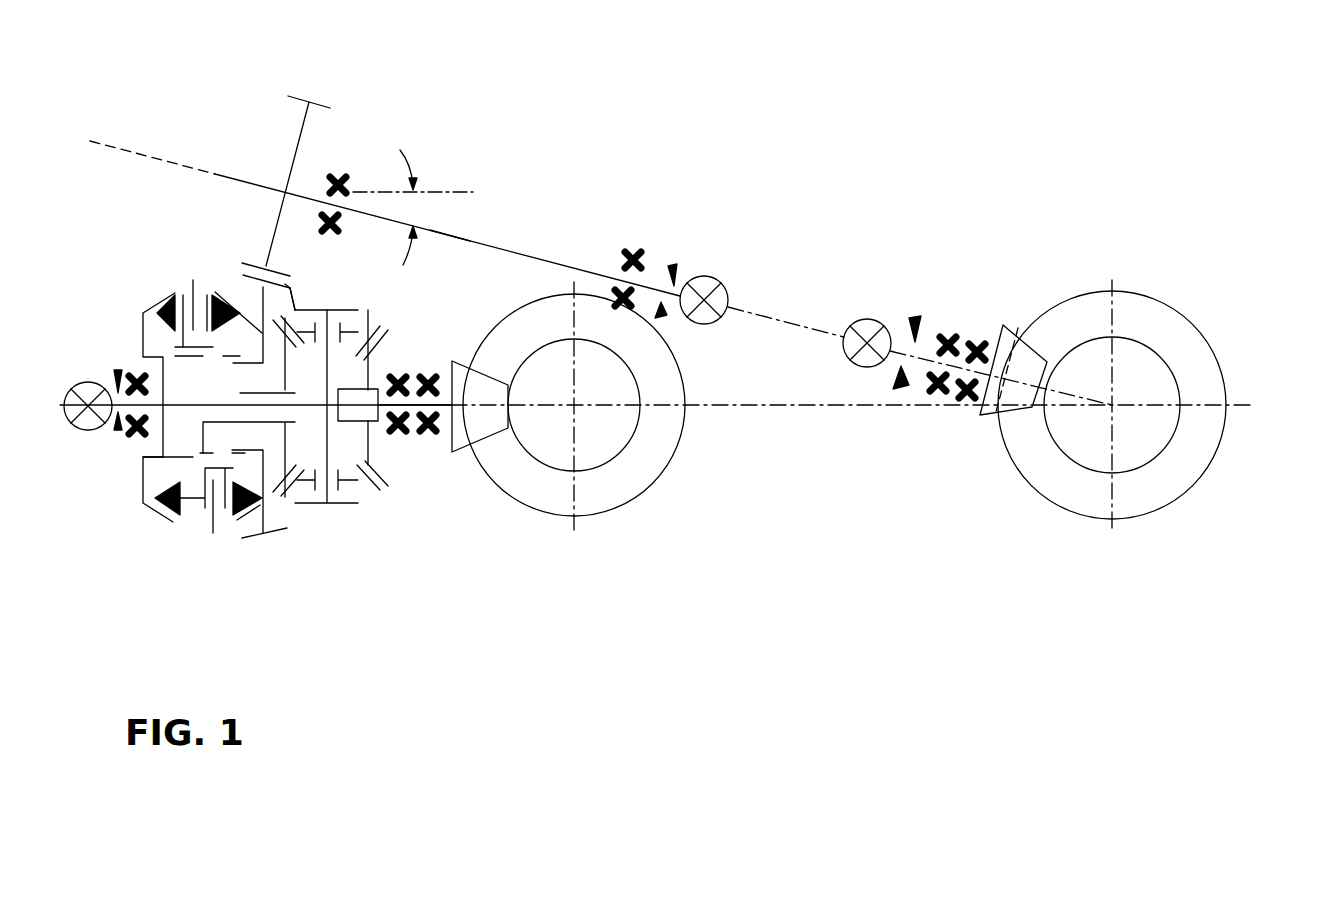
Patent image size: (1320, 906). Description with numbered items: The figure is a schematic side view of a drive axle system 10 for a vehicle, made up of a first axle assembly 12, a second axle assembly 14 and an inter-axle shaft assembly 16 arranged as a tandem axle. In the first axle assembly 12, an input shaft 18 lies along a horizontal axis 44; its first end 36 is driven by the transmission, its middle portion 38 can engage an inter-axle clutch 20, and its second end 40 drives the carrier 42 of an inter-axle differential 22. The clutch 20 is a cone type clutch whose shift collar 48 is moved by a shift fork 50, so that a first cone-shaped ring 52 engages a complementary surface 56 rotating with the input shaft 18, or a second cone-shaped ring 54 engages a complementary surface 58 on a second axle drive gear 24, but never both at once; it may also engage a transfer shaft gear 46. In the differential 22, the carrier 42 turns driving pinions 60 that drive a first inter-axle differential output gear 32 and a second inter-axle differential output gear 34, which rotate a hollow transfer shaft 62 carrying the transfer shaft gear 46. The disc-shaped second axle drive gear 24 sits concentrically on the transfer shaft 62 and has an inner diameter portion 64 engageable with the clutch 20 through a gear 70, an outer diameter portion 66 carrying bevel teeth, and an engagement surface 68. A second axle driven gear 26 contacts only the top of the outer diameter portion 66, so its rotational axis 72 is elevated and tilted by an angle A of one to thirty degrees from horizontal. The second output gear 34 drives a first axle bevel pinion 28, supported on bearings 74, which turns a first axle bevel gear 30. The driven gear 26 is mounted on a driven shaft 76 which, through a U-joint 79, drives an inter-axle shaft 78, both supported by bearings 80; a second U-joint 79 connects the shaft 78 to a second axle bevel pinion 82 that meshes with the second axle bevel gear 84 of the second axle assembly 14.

The drive axle system 10 is at (634, 164).
The first axle assembly 12 is at (233, 572).
The second axle assembly 14 is at (1008, 494).
The inter-axle shaft assembly 16 is at (522, 230).
The input shaft 18 is at (94, 428).
The inter-axle clutch 20 is at (173, 521).
The inter-axle differential 22 is at (343, 509).
The second axle drive gear 24 is at (265, 297).
The second axle driven gear 26 is at (301, 130).
The first axle bevel pinion 28 is at (462, 452).
The first axle bevel gear 30 is at (634, 504).
The first inter-axle differential output gear 32 is at (289, 438).
The second inter-axle differential output gear 34 is at (370, 452).
The first end 36 is at (124, 370).
The middle portion 38 is at (195, 410).
The second end 40 is at (305, 404).
The carrier 42 is at (347, 447).
The horizontal axis 44 is at (742, 406).
The transfer shaft gear 46 is at (140, 314).
The shift collar 48 is at (241, 313).
The shift fork 50 is at (193, 280).
The first cone-shaped ring 52 is at (182, 293).
The second cone-shaped ring 54 is at (217, 290).
The complimentary shaped surface 56 is at (155, 298).
The complimentary shaped surface 58 is at (231, 292).
The driving pinions 60 is at (367, 326).
The transfer shaft 62 is at (240, 392).
The inner diameter portion 64 is at (258, 364).
The outer diameter portion 66 is at (298, 295).
The engagement surface 68 is at (290, 276).
The gear 70 is at (266, 368).
The rotational axis 72 is at (152, 157).
The bearings 74 is at (426, 374).
The driven shaft 76 is at (456, 240).
The inter-axle shaft 78 is at (778, 319).
The U-joint 79 is at (726, 288).
The bearings 80 is at (338, 173).
The second axle bevel pinion 82 is at (1012, 325).
The second axle bevel gear 84 is at (1130, 292).
The angle A is at (413, 207).